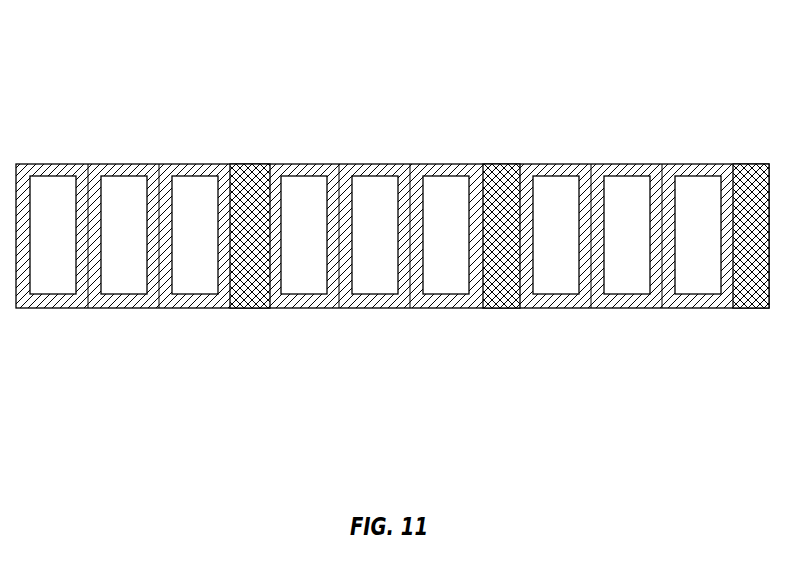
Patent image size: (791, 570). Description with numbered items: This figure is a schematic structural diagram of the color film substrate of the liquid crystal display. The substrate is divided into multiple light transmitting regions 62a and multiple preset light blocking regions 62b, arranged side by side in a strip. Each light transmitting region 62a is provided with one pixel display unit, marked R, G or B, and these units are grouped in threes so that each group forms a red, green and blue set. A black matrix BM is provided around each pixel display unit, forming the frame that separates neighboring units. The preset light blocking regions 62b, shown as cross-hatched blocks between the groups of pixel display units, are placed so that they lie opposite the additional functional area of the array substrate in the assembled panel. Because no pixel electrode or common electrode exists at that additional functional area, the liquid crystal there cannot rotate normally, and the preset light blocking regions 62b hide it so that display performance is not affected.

The light transmitting region 62a is at (698, 213).
The preset light blocking region 62b is at (750, 275).
The black matrix BM is at (193, 308).